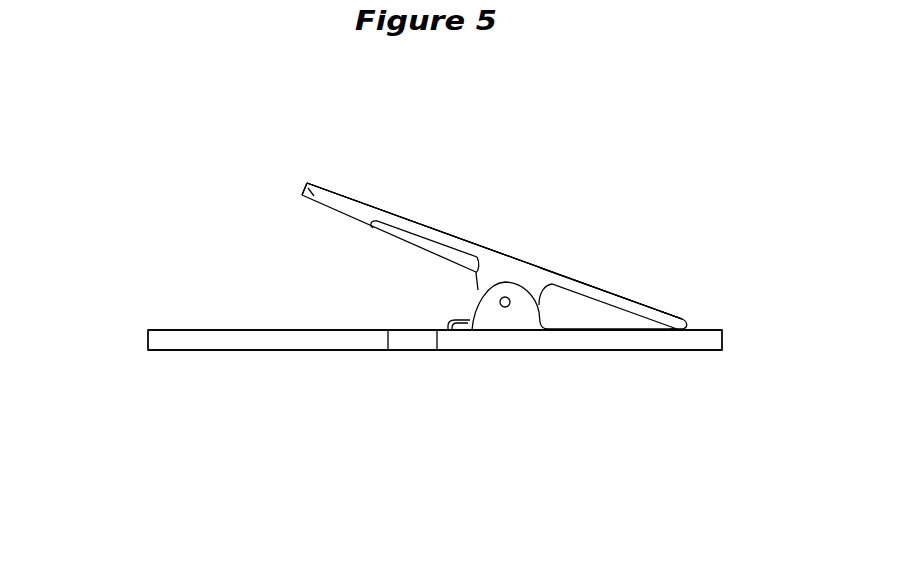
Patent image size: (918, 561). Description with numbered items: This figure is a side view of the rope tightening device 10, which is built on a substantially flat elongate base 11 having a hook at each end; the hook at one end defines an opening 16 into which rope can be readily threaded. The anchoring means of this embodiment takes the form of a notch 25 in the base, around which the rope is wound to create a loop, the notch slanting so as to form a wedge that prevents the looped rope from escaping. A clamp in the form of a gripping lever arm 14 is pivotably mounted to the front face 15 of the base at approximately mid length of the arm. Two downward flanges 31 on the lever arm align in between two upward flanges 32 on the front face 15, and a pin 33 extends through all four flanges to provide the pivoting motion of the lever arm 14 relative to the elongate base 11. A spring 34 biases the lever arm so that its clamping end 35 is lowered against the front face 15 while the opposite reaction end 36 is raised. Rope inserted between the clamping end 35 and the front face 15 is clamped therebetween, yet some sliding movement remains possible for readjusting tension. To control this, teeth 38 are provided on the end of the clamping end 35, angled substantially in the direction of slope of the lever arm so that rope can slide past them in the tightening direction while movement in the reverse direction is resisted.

The rope tightening device 10 is at (469, 190).
The elongate base 11 is at (642, 343).
The gripping lever arm 14 is at (514, 236).
The front face 15 is at (223, 328).
The opening 16 is at (213, 350).
The notch 25 is at (401, 342).
The downward flanges 31 is at (535, 273).
The upward flanges 32 is at (523, 315).
The pin 33 is at (505, 308).
The spring 34 is at (452, 321).
The clamping end 35 is at (650, 303).
The reaction end 36 is at (307, 182).
The teeth 38 is at (676, 330).